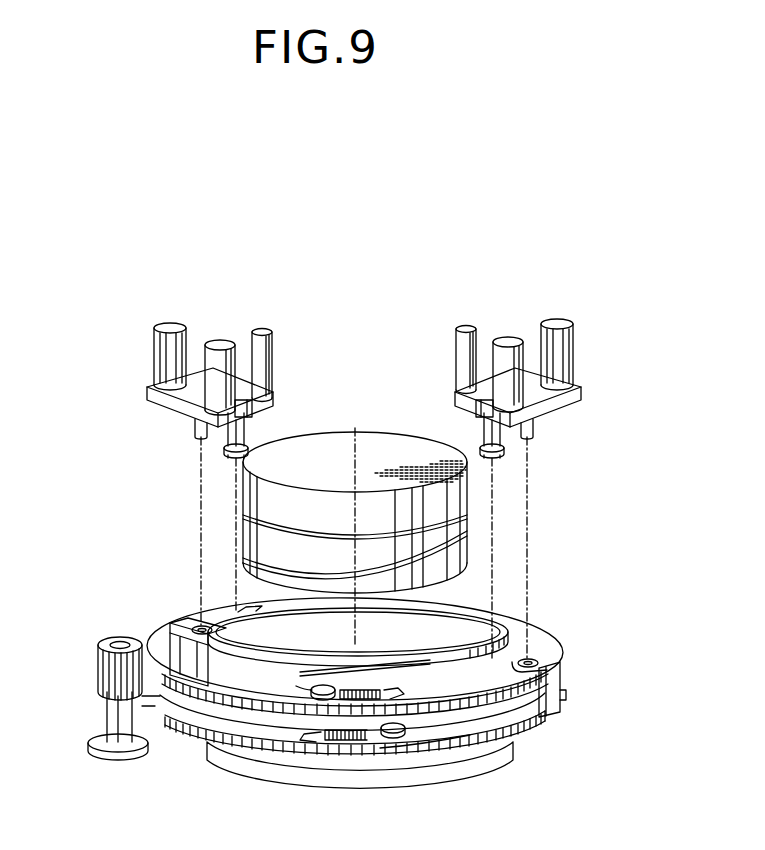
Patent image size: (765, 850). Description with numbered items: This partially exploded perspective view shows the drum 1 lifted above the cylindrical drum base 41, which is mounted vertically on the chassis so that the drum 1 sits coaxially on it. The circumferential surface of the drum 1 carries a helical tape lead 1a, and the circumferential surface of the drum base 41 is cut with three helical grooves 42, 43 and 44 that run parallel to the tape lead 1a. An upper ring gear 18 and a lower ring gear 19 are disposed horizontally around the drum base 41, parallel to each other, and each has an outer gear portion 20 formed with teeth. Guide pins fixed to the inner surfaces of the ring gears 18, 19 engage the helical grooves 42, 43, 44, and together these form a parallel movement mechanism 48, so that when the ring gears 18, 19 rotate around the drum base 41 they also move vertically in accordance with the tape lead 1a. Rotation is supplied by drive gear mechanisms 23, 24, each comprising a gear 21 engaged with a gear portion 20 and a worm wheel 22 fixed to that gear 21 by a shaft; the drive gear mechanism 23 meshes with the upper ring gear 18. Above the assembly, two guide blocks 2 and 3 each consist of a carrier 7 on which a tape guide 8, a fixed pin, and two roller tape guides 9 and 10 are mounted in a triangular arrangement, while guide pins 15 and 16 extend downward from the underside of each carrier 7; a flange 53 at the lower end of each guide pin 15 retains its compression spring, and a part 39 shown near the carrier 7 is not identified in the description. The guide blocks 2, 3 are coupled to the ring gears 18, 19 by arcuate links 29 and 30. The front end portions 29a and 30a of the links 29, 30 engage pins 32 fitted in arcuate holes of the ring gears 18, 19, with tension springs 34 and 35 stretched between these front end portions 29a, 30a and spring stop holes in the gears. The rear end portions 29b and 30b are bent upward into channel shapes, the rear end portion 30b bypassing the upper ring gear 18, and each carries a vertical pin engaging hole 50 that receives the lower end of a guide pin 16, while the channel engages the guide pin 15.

The drum 1 is at (345, 437).
The tape lead 1a is at (397, 563).
The guide block 2 is at (288, 336).
The guide block 3 is at (580, 342).
The carrier 7 is at (268, 403).
The tape guide 8 is at (262, 328).
The tape guide 9 is at (218, 340).
The tape guide 10 is at (168, 323).
The guide pin 15 is at (238, 439).
The guide pin 16 is at (195, 428).
The upper ring gear 18 is at (553, 648).
The lower ring gear 19 is at (567, 696).
The outer gear portion 20 is at (263, 743).
The gear 21 is at (95, 668).
The worm wheel 22 is at (152, 732).
The drive gear mechanism 23 is at (94, 727).
The drive gear mechanism 24 is at (94, 701).
The link 29 is at (230, 683).
The front end portion 29a is at (305, 690).
The rear end portion 29b is at (168, 643).
The link 30 is at (467, 723).
The front end portion 30a is at (378, 732).
The rear end portion 30b is at (562, 677).
The pin 32 is at (324, 684).
The tension spring 34 is at (356, 694).
The tension spring 35 is at (337, 743).
The block 39 is at (246, 418).
The drum base 41 is at (505, 632).
The helical groove 42 is at (385, 685).
The helical groove 43 is at (483, 615).
The helical groove 44 is at (230, 610).
The parallel movement mechanism 48 is at (572, 605).
The pin engaging hole 50 is at (200, 628).
The flange 53 is at (236, 457).